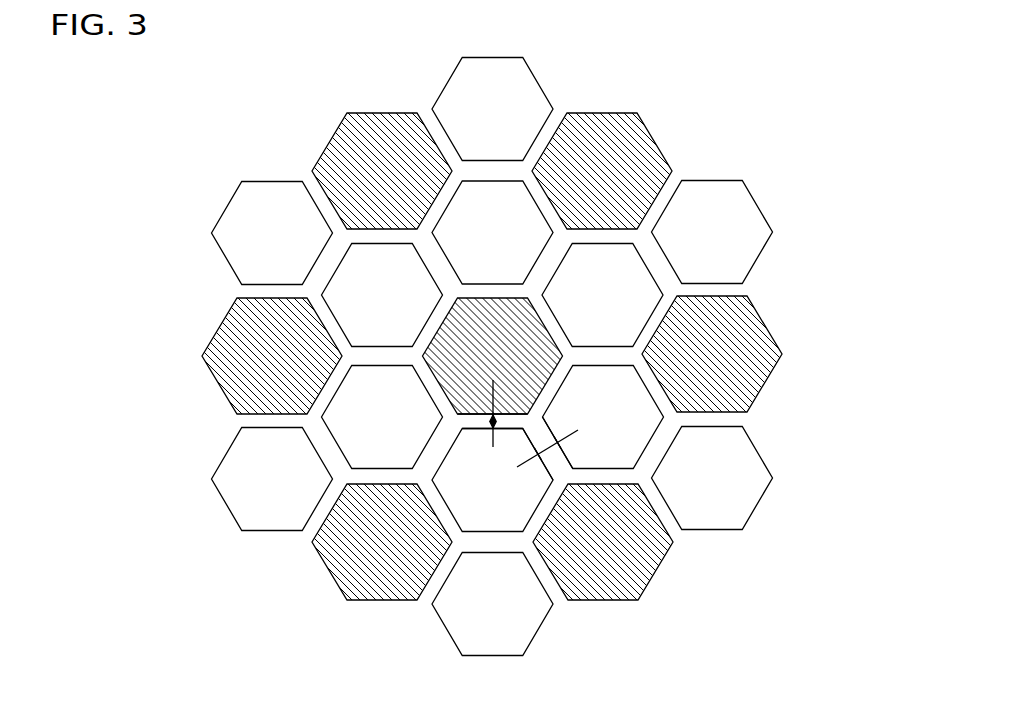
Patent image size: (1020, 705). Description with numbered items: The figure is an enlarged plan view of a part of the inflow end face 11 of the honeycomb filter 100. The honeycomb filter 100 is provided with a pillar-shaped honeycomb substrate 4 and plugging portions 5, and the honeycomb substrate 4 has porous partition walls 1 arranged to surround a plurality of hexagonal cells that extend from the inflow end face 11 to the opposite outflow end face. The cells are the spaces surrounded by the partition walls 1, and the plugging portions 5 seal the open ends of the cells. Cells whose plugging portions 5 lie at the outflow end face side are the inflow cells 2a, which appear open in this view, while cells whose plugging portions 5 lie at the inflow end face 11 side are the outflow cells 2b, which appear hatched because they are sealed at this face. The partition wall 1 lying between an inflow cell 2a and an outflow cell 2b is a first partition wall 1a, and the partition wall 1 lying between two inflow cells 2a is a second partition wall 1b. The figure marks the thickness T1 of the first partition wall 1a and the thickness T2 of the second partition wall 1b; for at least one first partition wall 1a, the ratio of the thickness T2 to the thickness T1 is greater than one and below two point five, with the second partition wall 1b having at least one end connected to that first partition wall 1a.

The honeycomb filter 100 is at (800, 55).
The inflow end face 11 is at (277, 137).
The partition wall 1 is at (533, 285).
The first partition wall 1a is at (482, 420).
The second partition wall 1b is at (557, 460).
The inflow cell 2a is at (603, 416).
The outflow cell 2b is at (490, 350).
The honeycomb substrate 4 is at (660, 117).
The plugging portion 5 is at (472, 327).
The thickness of the first partition wall T1 is at (493, 427).
The thickness of the second partition wall T2 is at (558, 445).